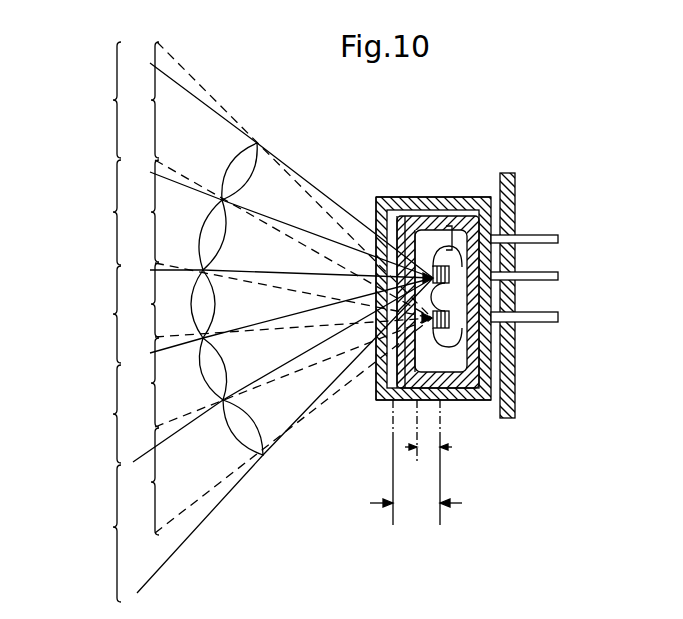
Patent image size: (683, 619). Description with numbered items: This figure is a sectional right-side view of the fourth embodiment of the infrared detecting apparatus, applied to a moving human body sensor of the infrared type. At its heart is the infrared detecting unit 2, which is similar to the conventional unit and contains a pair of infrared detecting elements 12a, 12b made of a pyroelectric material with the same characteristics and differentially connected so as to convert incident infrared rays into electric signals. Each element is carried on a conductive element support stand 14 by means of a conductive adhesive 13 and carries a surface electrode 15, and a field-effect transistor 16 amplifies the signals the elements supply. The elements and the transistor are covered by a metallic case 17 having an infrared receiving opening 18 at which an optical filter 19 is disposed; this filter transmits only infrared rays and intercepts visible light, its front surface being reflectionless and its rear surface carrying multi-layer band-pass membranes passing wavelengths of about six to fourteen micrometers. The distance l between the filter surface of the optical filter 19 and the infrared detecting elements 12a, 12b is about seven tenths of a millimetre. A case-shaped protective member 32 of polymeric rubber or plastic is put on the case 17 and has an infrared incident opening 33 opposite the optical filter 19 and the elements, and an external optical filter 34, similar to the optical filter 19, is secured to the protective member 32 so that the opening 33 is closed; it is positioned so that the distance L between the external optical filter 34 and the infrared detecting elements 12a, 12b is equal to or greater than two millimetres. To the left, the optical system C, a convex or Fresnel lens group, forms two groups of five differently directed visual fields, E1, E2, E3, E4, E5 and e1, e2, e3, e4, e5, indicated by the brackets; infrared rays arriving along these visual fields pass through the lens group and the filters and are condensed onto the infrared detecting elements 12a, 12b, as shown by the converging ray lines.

The infrared detecting unit 2 is at (478, 401).
The infrared detecting element 12a is at (549, 249).
The infrared detecting element 12b is at (542, 325).
The conductive adhesive 13 is at (457, 252).
The conductive element support stand 14 is at (536, 327).
The surface electrode 15 is at (437, 300).
The field-effect transistor 16 is at (465, 219).
The case 17 is at (400, 217).
The infrared receiving opening 18 is at (378, 210).
The optical filter 19 is at (428, 220).
The protective member 32 is at (457, 197).
The infrared incident opening 33 is at (380, 238).
The external optical filter 34 is at (395, 390).
The optical system C is at (257, 143).
The distance between external optical filter and infrared detecting elements L is at (416, 462).
The distance between filter surface and infrared detecting elements l is at (428, 433).
The visual field E1 is at (94, 100).
The visual field E2 is at (94, 212).
The visual field E3 is at (94, 314).
The visual field E4 is at (94, 414).
The visual field E5 is at (94, 533).
The visual field e1 is at (140, 100).
The visual field e2 is at (139, 211).
The visual field e3 is at (139, 300).
The visual field e4 is at (139, 382).
The visual field e5 is at (139, 481).